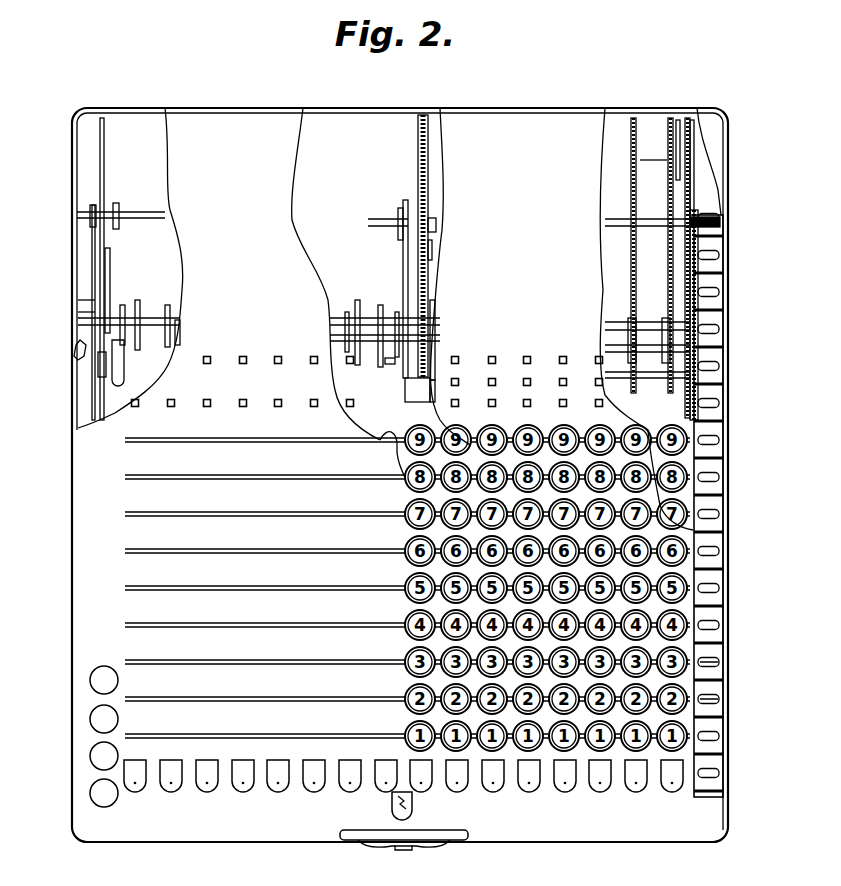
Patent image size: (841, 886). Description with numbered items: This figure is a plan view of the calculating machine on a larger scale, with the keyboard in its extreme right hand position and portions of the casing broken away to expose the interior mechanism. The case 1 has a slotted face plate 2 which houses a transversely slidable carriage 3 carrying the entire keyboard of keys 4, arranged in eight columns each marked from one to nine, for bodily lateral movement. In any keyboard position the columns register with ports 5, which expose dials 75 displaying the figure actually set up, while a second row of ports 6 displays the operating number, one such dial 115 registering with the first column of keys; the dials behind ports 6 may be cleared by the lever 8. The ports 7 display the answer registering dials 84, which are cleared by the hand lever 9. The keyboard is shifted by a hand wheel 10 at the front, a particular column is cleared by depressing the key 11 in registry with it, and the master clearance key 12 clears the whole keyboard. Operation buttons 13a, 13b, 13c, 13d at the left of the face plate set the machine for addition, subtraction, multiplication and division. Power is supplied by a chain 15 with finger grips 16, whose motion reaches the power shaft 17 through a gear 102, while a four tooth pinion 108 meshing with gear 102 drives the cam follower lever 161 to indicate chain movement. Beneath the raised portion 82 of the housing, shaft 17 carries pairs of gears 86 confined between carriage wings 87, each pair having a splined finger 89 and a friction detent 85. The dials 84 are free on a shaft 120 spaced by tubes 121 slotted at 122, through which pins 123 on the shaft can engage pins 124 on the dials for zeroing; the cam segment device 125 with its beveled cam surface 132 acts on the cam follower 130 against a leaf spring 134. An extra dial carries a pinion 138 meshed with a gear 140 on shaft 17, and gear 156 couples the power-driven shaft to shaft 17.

The case 1 is at (72, 588).
The slotted face plate 2 is at (150, 535).
The carriage 3 is at (405, 440).
The keys 4 is at (408, 588).
The ports 5 is at (530, 403).
The ports 6 is at (530, 382).
The ports 7 is at (530, 360).
The lever 8 is at (110, 380).
The lever 9 is at (78, 346).
The hand wheel 10 is at (378, 842).
The key 11 is at (277, 792).
The master clearance key 12 is at (412, 805).
The button 13a is at (90, 793).
The button 13b is at (90, 756).
The button 13c is at (90, 719).
The button 13d is at (90, 680).
The chain 15 is at (700, 557).
The finger grips 16 is at (705, 700).
The power shaft 17 is at (90, 216).
The dials 75 is at (433, 400).
The raised portion of the housing 82 is at (270, 182).
The dials 84 is at (418, 360).
The friction detent 85 is at (436, 226).
The gears 86 is at (427, 111).
The wings 87 is at (405, 285).
The finger 89 is at (640, 160).
The gear 102 is at (700, 335).
The four tooth pinion 108 is at (700, 403).
The dial 115 is at (430, 382).
The shaft 120 is at (85, 322).
The spacing tubes 121 is at (148, 312).
The slot 122 is at (345, 326).
The pins 123 is at (340, 339).
The pins 124 is at (170, 323).
The cam segment device 125 is at (85, 300).
The cam follower 130 is at (85, 332).
The beveled cam surface 132 is at (85, 312).
The leaf spring 134 is at (95, 356).
The pinion 138 is at (112, 304).
The gear 140 is at (100, 193).
The gear 156 is at (690, 180).
The cam follower lever 161 is at (700, 381).